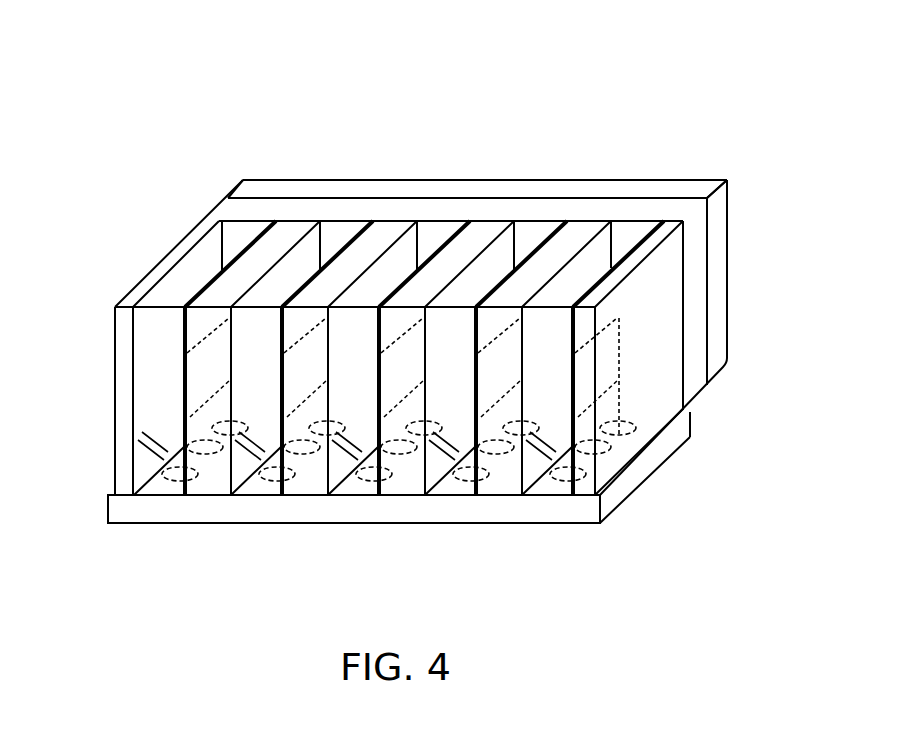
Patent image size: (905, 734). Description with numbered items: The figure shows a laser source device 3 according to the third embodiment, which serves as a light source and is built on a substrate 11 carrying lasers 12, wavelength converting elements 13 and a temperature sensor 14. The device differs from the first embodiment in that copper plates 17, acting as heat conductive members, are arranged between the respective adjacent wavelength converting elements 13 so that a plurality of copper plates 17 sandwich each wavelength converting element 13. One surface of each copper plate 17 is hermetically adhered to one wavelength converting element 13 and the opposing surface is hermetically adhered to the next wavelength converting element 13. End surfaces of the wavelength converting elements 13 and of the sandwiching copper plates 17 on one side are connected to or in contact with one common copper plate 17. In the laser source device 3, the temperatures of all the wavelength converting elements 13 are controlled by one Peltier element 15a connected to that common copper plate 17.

The laser source device 3 is at (423, 148).
The substrate 11 is at (613, 497).
The laser 12 is at (165, 480).
The wavelength converting element 13 is at (157, 300).
The temperature sensor 14 is at (213, 378).
The Peltier element 15a is at (262, 186).
The copper plate 17 is at (222, 215).